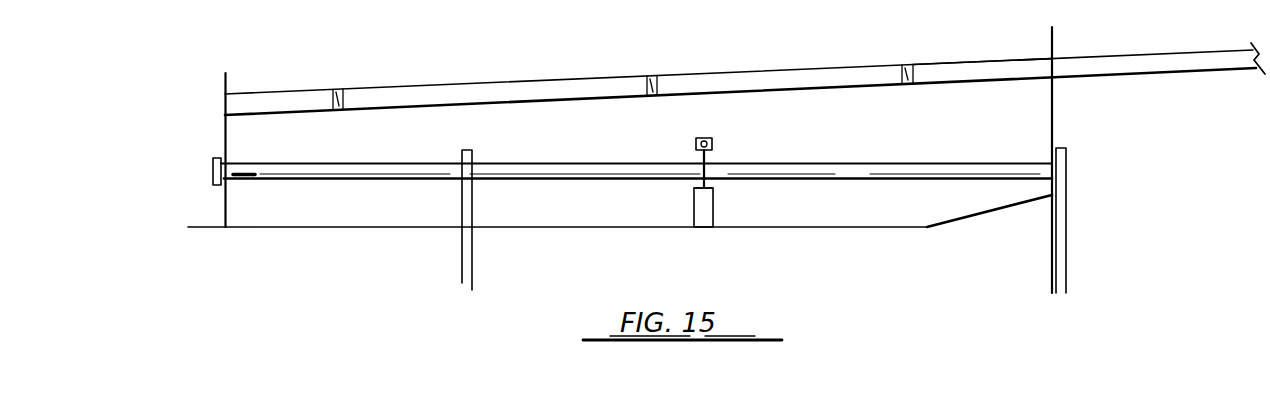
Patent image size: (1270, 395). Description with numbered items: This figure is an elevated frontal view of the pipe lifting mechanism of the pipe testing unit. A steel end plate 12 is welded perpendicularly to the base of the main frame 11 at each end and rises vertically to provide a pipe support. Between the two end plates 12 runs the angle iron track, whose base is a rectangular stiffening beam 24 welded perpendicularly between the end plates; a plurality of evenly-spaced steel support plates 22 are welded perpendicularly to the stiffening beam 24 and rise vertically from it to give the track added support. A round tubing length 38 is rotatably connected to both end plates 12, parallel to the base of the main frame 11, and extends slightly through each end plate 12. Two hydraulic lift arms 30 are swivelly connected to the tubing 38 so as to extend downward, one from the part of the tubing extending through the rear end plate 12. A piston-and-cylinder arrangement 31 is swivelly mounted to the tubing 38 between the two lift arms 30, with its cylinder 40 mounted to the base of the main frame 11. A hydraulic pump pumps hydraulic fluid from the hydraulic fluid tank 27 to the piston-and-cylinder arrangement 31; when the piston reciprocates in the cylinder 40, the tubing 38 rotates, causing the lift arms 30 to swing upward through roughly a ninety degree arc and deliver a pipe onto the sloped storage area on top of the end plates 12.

The main frame 11 is at (352, 228).
The end plate 12 is at (225, 130).
The steel support plate 22 is at (337, 92).
The rectangular stiffening beam 24 is at (1005, 81).
The hydraulic fluid tank 27 is at (963, 61).
The hydraulic lift arm 30 is at (465, 257).
The piston-and-cylinder arrangement 31 is at (693, 189).
The round tubing length 38 is at (253, 171).
The cylinder 40 is at (703, 214).